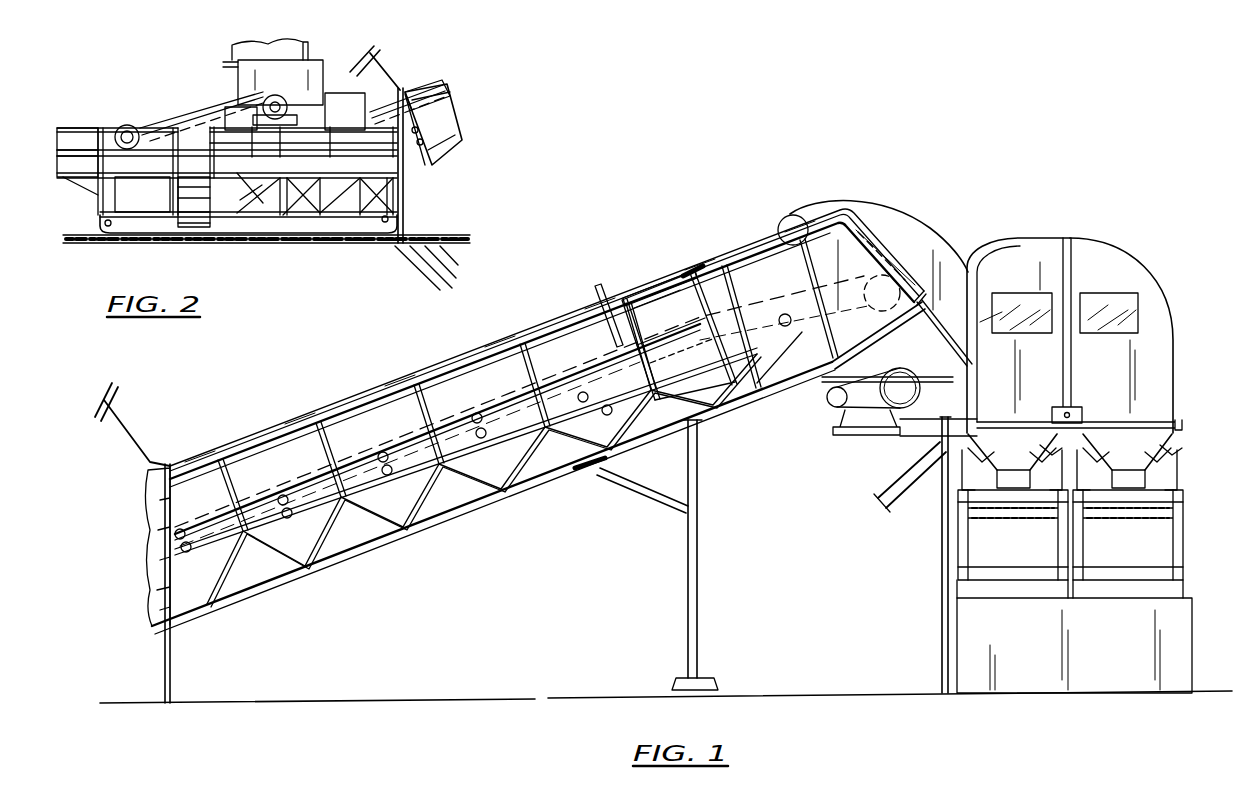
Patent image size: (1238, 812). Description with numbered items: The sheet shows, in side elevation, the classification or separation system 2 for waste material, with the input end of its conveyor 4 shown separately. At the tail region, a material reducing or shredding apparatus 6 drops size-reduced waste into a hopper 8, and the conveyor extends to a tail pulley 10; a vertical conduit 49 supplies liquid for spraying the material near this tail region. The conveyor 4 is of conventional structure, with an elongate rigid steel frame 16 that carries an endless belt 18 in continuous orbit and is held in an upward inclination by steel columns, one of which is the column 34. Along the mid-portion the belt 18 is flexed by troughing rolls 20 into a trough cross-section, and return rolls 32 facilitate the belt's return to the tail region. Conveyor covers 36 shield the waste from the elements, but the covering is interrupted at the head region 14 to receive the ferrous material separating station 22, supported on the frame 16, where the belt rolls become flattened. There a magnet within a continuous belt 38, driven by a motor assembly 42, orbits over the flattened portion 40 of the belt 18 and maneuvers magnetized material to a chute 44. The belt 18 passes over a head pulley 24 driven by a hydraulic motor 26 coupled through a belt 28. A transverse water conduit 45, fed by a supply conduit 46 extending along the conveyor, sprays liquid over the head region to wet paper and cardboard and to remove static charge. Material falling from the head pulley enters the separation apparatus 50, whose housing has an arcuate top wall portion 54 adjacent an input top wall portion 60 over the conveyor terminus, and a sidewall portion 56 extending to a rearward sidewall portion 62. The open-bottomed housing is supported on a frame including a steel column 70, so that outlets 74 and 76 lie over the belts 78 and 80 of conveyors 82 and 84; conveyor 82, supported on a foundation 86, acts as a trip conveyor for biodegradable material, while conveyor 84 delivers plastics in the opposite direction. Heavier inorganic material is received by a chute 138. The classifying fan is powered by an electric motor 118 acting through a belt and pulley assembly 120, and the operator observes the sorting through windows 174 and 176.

In FIG. 1, the classification or separation system 2 is at (590, 230).
In FIG. 1, the conveyor 4 is at (342, 352).
In FIG. 2, the conveyor 4 is at (440, 175).
In FIG. 2, the material reducing or shredding apparatus 6 is at (323, 75).
In FIG. 2, the hopper 8 is at (245, 195).
In FIG. 2, the tail pulley 10 is at (258, 222).
In FIG. 1, the head region 14 is at (706, 232).
In FIG. 1, the frame 16 is at (445, 512).
In FIG. 2, the frame 16 is at (455, 147).
In FIG. 1, the belt 18 is at (400, 425).
In FIG. 1, the troughing rolls 20 is at (275, 487).
In FIG. 1, the ferrous material separating station 22 is at (700, 268).
In FIG. 1, the head pulley 24 is at (920, 265).
In FIG. 1, the hydraulic motor 26 is at (792, 214).
In FIG. 1, the belt 28 is at (880, 242).
In FIG. 1, the return rolls 32 is at (362, 505).
In FIG. 1, the steel column 34 is at (702, 565).
In FIG. 1, the conveyor covers 36 is at (362, 388).
In FIG. 2, the conveyor covers 36 is at (408, 85).
In FIG. 1, the continuous belt 38 is at (660, 290).
In FIG. 1, the flattened portion 40 is at (610, 368).
In FIG. 1, the motor assembly 42 is at (597, 286).
In FIG. 1, the chute 44 is at (740, 390).
In FIG. 1, the transverse water conduit 45 is at (922, 292).
In FIG. 1, the supply conduit 46 is at (545, 325).
In FIG. 2, the supply conduit 46 is at (445, 98).
In FIG. 1, the vertical conduit 49 is at (170, 674).
In FIG. 2, the vertical conduit 49 is at (405, 216).
In FIG. 1, the separation apparatus 50 is at (1146, 232).
In FIG. 1, the top wall portion 54 is at (1010, 238).
In FIG. 1, the sidewall portion 56 is at (1092, 255).
In FIG. 1, the input top wall portion 60 is at (852, 206).
In FIG. 1, the rearward sidewall portion 62 is at (948, 262).
In FIG. 1, the steel column 70 is at (945, 574).
In FIG. 1, the outlet 74 is at (1028, 451).
In FIG. 1, the outlet 76 is at (1141, 451).
In FIG. 1, the belt 78 is at (1046, 448).
In FIG. 1, the belt 80 is at (1168, 448).
In FIG. 1, the conveyor 82 is at (1028, 552).
In FIG. 1, the conveyor 84 is at (1143, 552).
In FIG. 1, the foundation 86 is at (1175, 633).
In FIG. 1, the electric motor 118 is at (835, 404).
In FIG. 1, the belt and pulley assembly 120 is at (900, 428).
In FIG. 1, the chute 138 is at (880, 490).
In FIG. 1, the window 174 is at (1020, 303).
In FIG. 1, the window 176 is at (1112, 305).